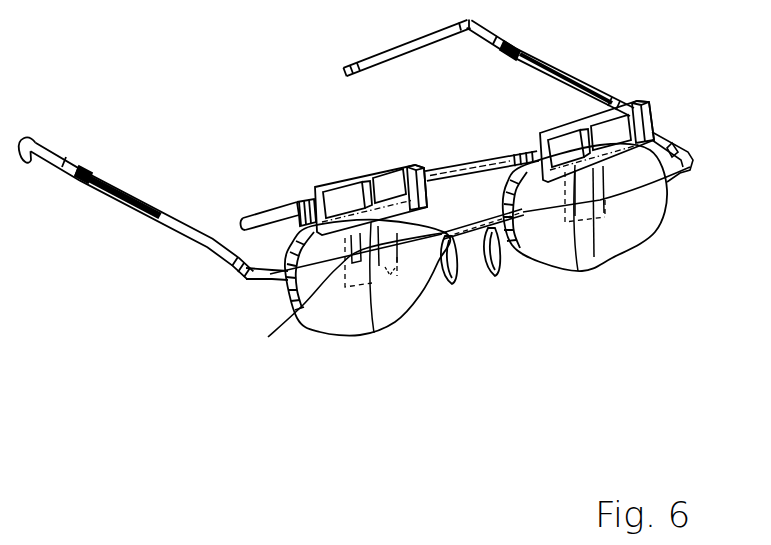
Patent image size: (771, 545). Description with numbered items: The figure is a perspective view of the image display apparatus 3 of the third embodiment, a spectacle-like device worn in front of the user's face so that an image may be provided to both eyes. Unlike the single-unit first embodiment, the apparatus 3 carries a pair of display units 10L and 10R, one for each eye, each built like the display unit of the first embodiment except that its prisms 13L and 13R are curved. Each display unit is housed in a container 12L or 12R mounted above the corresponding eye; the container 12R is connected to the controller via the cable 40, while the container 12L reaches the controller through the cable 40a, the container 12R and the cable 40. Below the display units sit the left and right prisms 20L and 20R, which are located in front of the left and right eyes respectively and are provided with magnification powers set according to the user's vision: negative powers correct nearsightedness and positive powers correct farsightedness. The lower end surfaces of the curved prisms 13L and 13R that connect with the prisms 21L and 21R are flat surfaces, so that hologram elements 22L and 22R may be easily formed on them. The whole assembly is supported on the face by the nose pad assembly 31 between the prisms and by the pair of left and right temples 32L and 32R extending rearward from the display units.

The image display apparatus 3 is at (486, 402).
The display unit 10R is at (331, 162).
The display unit 10L is at (550, 107).
The container 12R is at (417, 166).
The container 12L is at (639, 104).
The prism 13R is at (303, 316).
The prism 13L is at (611, 177).
The prism 20R is at (300, 305).
The prism 20L is at (629, 238).
The prism 21R is at (333, 322).
The prism 21L is at (627, 253).
The hologram element 22R is at (386, 272).
The hologram element 22L is at (582, 238).
The nose pad assembly 31 is at (479, 283).
The temple 32R is at (140, 207).
The temple 32L is at (530, 67).
The cable 40 is at (260, 214).
The cable 40a is at (475, 165).